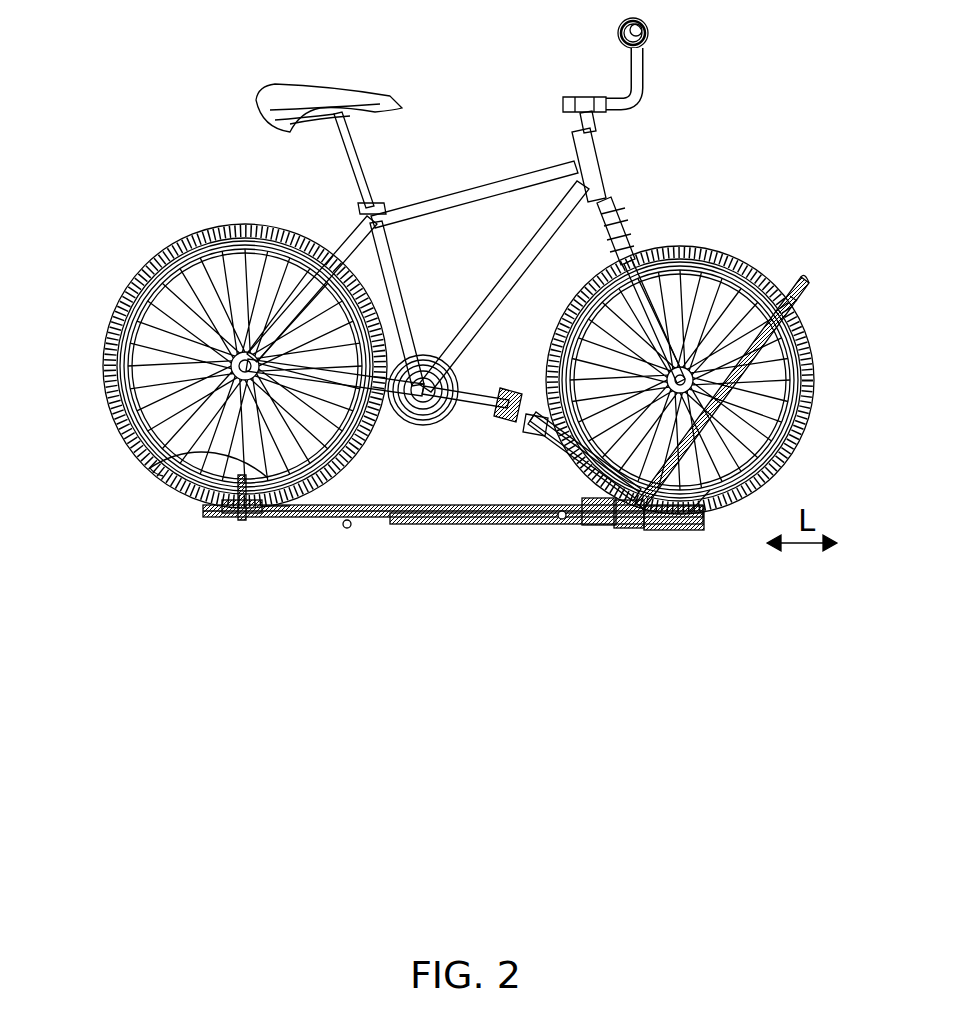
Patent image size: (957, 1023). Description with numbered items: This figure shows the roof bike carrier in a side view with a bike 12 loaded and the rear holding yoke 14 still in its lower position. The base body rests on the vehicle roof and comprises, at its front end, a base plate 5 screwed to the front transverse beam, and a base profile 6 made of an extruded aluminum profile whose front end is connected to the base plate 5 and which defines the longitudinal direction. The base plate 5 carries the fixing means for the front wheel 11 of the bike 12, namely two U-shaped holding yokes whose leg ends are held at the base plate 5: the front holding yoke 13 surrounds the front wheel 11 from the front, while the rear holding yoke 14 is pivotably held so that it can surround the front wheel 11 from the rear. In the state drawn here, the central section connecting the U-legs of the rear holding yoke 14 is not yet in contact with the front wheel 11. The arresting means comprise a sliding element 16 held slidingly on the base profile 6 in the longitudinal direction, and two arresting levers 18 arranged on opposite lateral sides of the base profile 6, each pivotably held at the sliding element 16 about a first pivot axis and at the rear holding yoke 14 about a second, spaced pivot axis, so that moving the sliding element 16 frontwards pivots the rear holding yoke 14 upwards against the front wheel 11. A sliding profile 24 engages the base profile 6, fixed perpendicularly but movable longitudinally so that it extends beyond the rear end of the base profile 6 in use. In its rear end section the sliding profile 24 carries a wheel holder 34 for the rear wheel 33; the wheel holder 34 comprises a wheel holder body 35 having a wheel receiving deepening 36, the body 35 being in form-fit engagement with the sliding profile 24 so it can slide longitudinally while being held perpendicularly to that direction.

The rear wheel 33 is at (131, 279).
The front wheel 11 is at (800, 386).
The bike 12 is at (600, 178).
The wheel receiving deepening 36 is at (150, 468).
The wheel holder 34 is at (230, 520).
The wheel holder body 35 is at (253, 520).
The sliding profile 24 is at (307, 518).
The base profile 6 is at (500, 527).
The rear holding yoke 14 is at (548, 447).
The sliding element 16 is at (572, 528).
The arresting lever 18 is at (620, 528).
The base plate 5 is at (662, 528).
The front holding yoke 13 is at (806, 266).